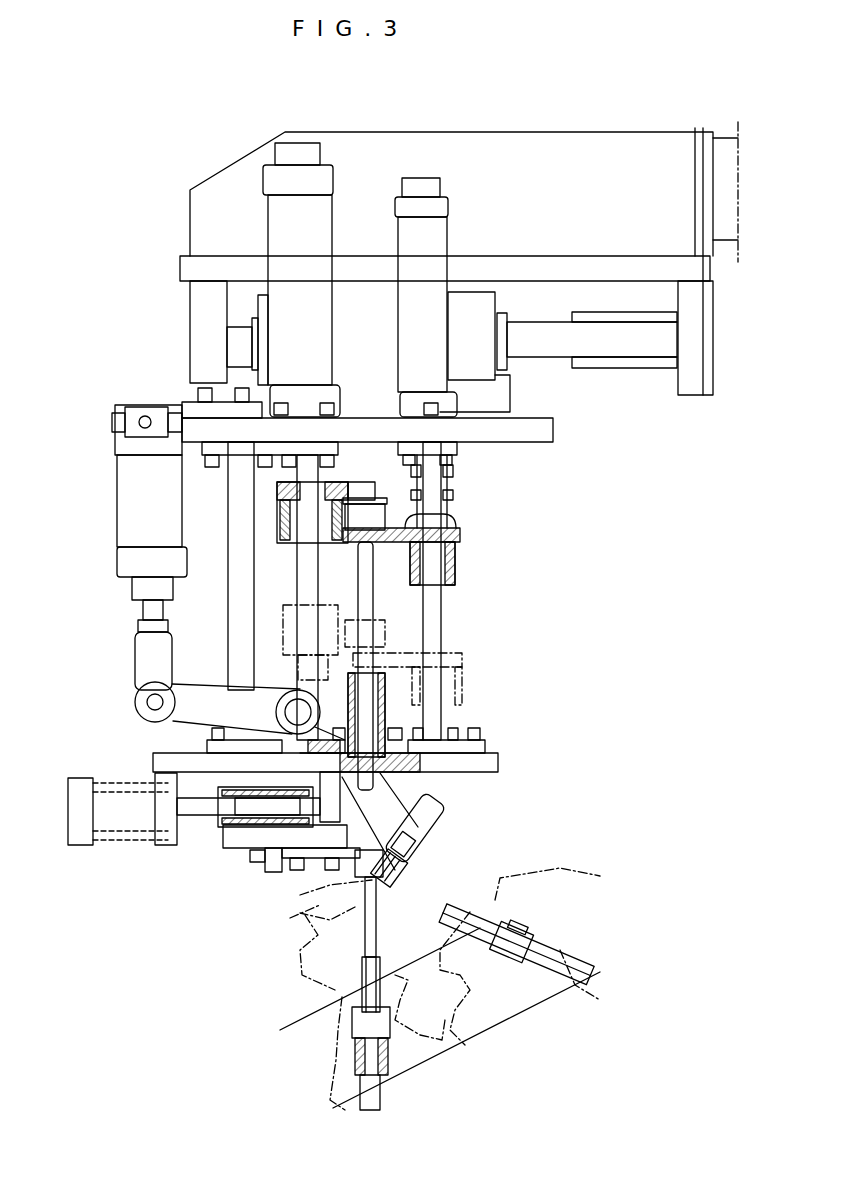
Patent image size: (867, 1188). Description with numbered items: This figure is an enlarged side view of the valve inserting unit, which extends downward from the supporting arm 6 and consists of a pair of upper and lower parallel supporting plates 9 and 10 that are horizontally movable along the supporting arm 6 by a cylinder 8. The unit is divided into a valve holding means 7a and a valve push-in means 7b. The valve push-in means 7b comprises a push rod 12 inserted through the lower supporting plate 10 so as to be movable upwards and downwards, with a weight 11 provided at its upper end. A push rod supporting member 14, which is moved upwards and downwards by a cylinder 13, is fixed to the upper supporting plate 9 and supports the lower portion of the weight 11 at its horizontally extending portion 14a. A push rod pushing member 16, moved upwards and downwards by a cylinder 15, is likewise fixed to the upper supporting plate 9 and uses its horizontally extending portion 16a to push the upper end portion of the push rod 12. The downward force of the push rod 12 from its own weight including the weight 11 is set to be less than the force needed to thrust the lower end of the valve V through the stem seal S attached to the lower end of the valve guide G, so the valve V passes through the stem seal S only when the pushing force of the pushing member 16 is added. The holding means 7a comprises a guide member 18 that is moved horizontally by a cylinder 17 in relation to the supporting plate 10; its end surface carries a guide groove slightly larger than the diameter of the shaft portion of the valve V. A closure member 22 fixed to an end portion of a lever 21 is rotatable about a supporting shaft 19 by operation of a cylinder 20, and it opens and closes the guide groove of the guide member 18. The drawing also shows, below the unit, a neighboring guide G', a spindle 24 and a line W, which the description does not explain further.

The supporting arm 6 is at (500, 145).
The valve holding means 7a is at (253, 862).
The valve push-in means 7b is at (490, 545).
The cylinder 8 is at (625, 362).
The upper supporting plate 9 is at (540, 432).
The lower supporting plate 10 is at (490, 760).
The weight 11 is at (370, 516).
The push rod 12 is at (375, 592).
The cylinder 13 is at (447, 232).
The push rod supporting member 14 is at (455, 572).
The horizontally extending portion 14a is at (420, 515).
The cylinder 15 is at (280, 228).
The push rod pushing member 16 is at (283, 540).
The horizontally extending portion 16a is at (362, 490).
The cylinder 17 is at (105, 790).
The guide member 18 is at (320, 850).
The supporting shaft 19 is at (297, 712).
The cylinder 20 is at (137, 484).
The lever 21 is at (385, 862).
The closure member 22 is at (393, 795).
The spindle 24 is at (392, 1090).
The valve guide G is at (366, 995).
The gear G' is at (518, 922).
The stem seal S is at (352, 1025).
The valve V is at (360, 887).
The workpiece line W is at (455, 1040).